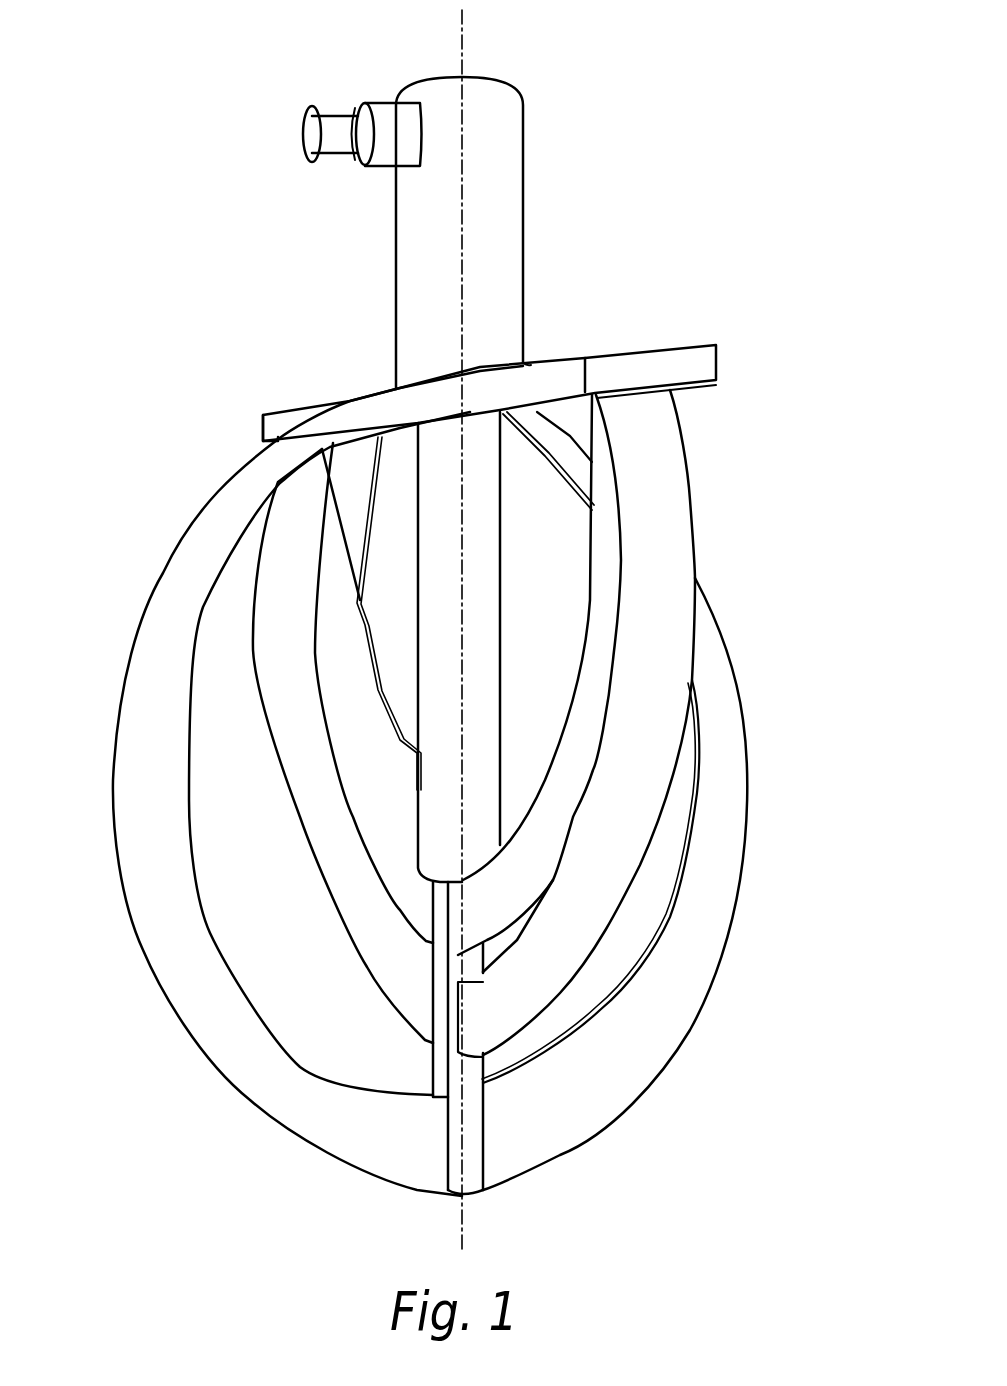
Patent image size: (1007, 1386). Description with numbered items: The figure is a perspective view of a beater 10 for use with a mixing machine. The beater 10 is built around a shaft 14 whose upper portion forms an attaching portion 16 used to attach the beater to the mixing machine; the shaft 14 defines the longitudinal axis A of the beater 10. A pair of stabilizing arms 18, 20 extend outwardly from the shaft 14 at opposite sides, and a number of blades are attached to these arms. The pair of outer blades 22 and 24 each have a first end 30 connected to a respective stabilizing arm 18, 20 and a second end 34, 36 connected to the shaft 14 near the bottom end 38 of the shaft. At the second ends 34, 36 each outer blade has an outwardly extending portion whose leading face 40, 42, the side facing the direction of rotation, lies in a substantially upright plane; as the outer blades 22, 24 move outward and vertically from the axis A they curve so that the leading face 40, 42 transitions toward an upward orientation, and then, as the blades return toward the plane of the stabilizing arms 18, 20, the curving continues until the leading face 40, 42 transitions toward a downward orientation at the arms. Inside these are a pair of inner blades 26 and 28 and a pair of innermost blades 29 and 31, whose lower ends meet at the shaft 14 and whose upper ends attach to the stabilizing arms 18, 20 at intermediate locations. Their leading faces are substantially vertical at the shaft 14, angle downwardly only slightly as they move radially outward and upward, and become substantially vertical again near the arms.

The longitudinal axis A is at (462, 44).
The beater 10 is at (718, 186).
The shaft 14 is at (492, 533).
The attaching portion 16 is at (517, 207).
The stabilizing arm 18 is at (290, 415).
The stabilizing arm 20 is at (648, 345).
The outer blade 22 is at (140, 890).
The outer blade 24 is at (730, 868).
The inner blade 26 is at (352, 897).
The inner blade 28 is at (677, 503).
The innermost blade 29 is at (357, 500).
The first end 30 is at (533, 370).
The innermost blade 31 is at (585, 703).
The second end 34 is at (447, 1157).
The second end 36 is at (485, 1143).
The bottom end 38 is at (463, 1197).
The leading face 40 is at (358, 1074).
The leading face 42 is at (677, 1012).